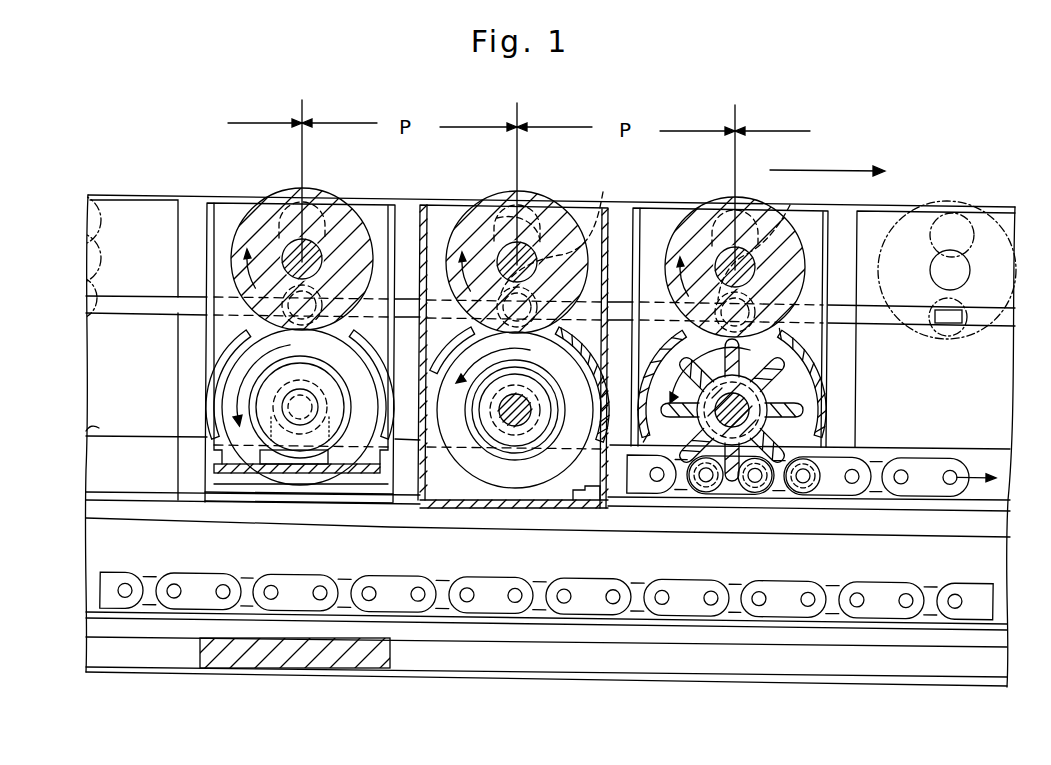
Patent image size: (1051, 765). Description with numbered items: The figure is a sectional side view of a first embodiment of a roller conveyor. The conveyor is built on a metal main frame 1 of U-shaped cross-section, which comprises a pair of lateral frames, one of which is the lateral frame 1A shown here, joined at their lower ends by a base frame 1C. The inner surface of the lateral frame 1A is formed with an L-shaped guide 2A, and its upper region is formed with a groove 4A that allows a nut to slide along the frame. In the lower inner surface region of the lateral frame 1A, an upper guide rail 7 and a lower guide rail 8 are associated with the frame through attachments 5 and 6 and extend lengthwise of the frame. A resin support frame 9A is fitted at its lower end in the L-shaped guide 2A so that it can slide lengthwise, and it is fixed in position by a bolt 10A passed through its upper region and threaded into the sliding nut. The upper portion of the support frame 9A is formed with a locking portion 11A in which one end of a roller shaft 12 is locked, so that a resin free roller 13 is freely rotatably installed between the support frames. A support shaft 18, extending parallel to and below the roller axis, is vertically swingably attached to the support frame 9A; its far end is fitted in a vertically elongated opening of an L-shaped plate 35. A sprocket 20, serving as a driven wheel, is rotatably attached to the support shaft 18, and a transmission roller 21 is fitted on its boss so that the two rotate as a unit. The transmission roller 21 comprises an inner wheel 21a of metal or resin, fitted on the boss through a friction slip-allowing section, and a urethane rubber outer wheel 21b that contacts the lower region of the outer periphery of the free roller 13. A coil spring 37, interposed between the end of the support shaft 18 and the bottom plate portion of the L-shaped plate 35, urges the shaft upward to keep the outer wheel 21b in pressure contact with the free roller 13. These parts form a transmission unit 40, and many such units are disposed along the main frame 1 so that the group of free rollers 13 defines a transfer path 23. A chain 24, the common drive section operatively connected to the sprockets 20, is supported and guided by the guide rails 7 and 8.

The main frame 1 is at (132, 672).
The lateral frame 1A is at (95, 363).
The base frame 1C is at (246, 660).
The L-shaped guide 2A is at (84, 427).
The groove 4A is at (124, 303).
The attachment 5 is at (990, 527).
The attachment 6 is at (993, 645).
The upper guide rail 7 is at (990, 502).
The lower guide rail 8 is at (997, 620).
The support frame 9A is at (207, 228).
The bolt 10A is at (788, 198).
The locking portion 11A is at (712, 245).
The roller shaft 12 is at (537, 250).
The free roller 13 is at (353, 237).
The support shaft 18 is at (513, 427).
The sprocket 20 is at (792, 417).
The transmission roller 21 is at (218, 416).
The inner wheel 21a is at (258, 388).
The outer wheel 21b is at (242, 432).
The transfer path 23 is at (840, 168).
The chain 24 is at (832, 593).
The L-shaped plate 35 is at (348, 472).
The coil spring 37 is at (263, 464).
The transmission unit 40 is at (233, 505).